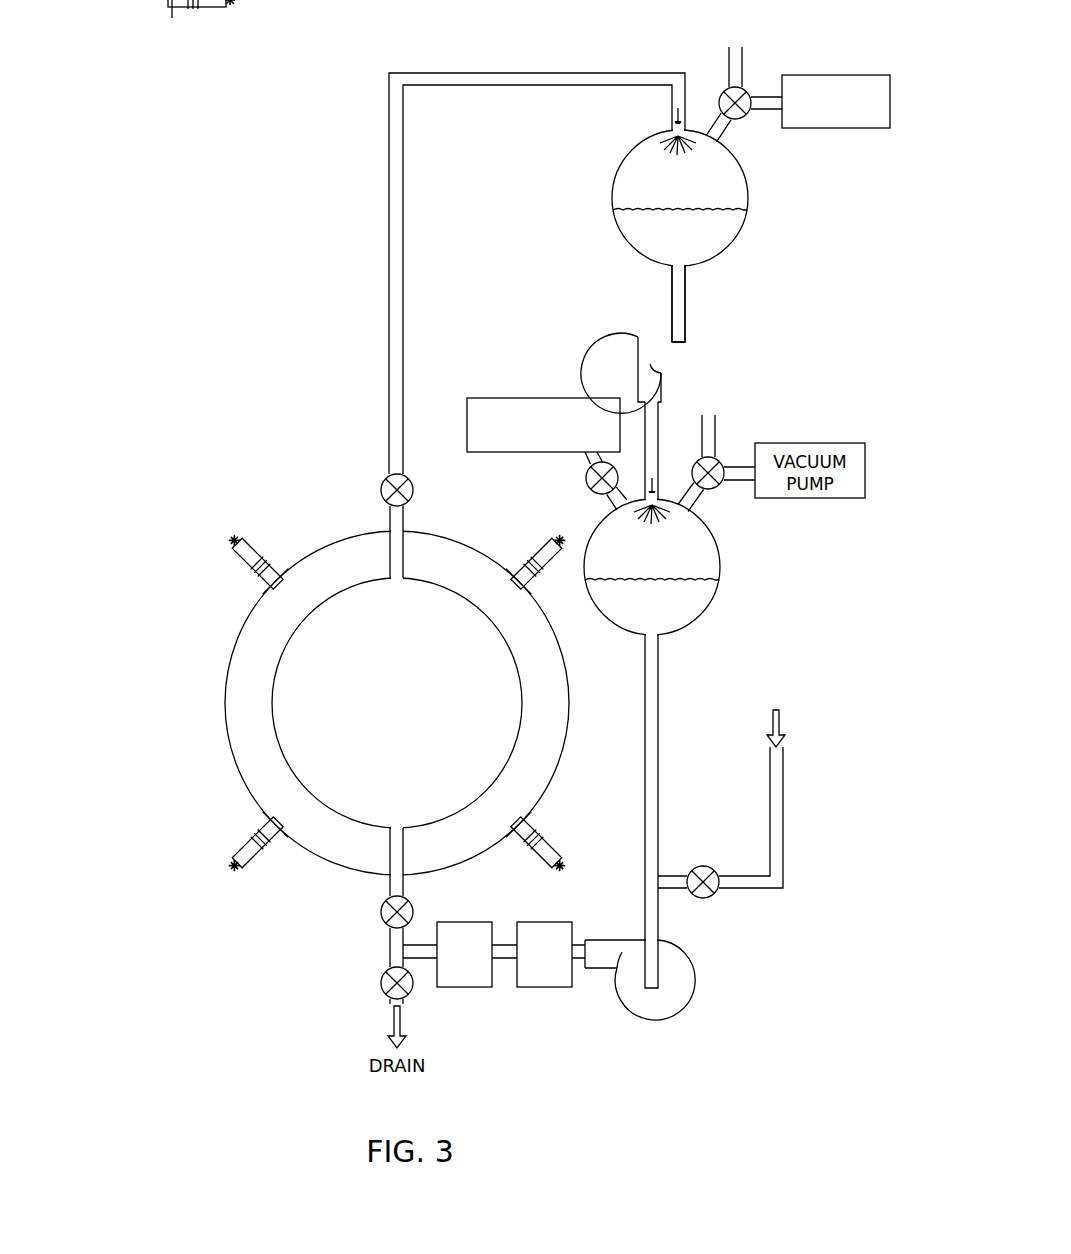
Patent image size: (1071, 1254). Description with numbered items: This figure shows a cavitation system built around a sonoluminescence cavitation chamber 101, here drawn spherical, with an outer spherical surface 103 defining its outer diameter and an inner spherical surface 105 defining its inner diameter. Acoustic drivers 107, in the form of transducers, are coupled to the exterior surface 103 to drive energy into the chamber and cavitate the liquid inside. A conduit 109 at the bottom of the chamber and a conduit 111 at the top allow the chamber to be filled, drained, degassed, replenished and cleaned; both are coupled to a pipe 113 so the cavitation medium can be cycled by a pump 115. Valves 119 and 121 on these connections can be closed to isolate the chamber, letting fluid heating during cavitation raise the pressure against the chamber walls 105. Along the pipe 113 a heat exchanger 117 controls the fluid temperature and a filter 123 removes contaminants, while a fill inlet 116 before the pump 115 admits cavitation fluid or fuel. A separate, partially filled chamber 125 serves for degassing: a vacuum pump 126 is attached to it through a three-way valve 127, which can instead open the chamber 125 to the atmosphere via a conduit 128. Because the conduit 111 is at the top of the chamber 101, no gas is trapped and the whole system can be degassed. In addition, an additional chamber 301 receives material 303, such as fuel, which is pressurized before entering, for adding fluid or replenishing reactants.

The cavitation chamber 101 is at (318, 469).
The outer spherical surface 103 is at (214, 735).
The inner spherical surface 105 is at (286, 679).
The acoustic drivers 107 is at (280, 534).
The conduit 109 is at (388, 856).
The conduit 111 is at (405, 560).
The pipe 113 is at (403, 177).
The pump 115 is at (690, 1005).
The fill inlet 116 is at (786, 846).
The heat exchanger 117 is at (464, 954).
The valve 119 is at (380, 912).
The valve 121 is at (380, 489).
The filter 123 is at (544, 954).
The degassing chamber 125 is at (582, 188).
The vacuum pump 126 is at (836, 101).
The three-way valve 127 is at (742, 118).
The conduit 128 is at (743, 26).
The additional chamber 301 is at (739, 546).
The pressurized material 303 is at (574, 398).